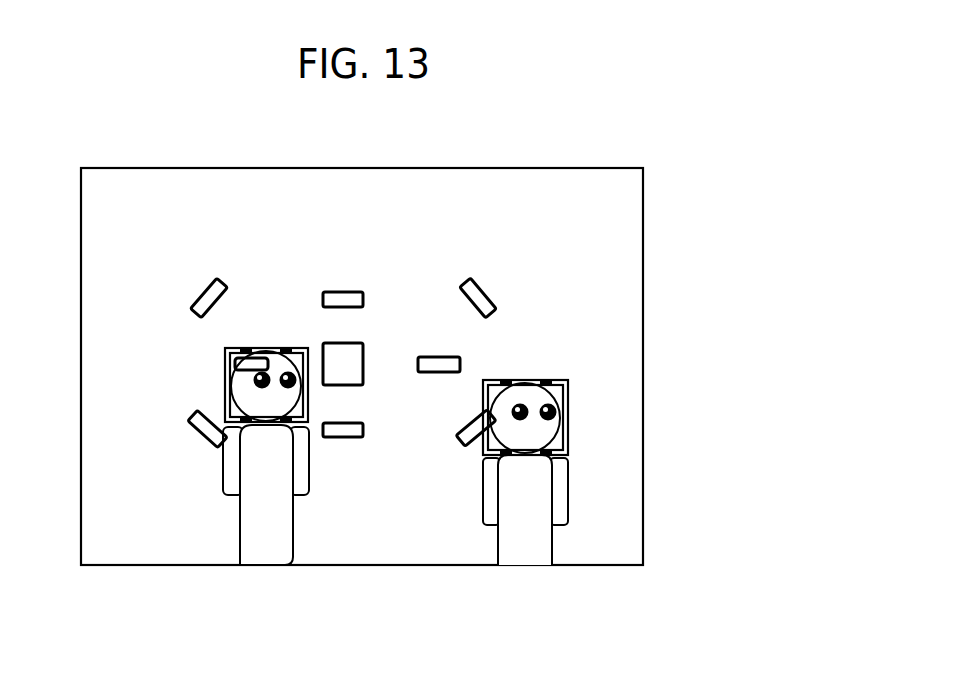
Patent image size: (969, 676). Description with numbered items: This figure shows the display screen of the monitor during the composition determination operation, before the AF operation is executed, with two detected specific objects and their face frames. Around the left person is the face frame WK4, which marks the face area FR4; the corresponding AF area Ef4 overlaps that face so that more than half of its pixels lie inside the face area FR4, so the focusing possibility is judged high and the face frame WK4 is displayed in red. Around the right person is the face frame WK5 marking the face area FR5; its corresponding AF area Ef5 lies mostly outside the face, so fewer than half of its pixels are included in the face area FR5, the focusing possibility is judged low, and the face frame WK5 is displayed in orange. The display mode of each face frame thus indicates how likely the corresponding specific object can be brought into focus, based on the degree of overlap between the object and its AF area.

The face area FR4 is at (268, 345).
The AF area Ef4 is at (255, 356).
The face frame WK4 is at (307, 402).
The face area FR5 is at (528, 381).
The face frame WK5 is at (568, 437).
The AF area Ef5 is at (465, 447).